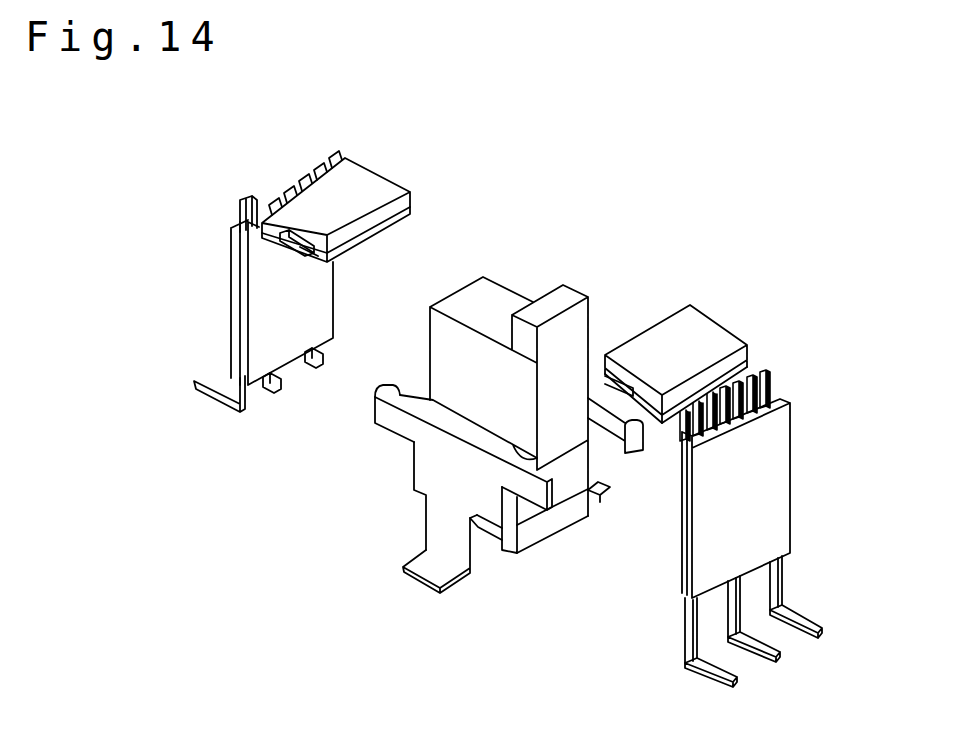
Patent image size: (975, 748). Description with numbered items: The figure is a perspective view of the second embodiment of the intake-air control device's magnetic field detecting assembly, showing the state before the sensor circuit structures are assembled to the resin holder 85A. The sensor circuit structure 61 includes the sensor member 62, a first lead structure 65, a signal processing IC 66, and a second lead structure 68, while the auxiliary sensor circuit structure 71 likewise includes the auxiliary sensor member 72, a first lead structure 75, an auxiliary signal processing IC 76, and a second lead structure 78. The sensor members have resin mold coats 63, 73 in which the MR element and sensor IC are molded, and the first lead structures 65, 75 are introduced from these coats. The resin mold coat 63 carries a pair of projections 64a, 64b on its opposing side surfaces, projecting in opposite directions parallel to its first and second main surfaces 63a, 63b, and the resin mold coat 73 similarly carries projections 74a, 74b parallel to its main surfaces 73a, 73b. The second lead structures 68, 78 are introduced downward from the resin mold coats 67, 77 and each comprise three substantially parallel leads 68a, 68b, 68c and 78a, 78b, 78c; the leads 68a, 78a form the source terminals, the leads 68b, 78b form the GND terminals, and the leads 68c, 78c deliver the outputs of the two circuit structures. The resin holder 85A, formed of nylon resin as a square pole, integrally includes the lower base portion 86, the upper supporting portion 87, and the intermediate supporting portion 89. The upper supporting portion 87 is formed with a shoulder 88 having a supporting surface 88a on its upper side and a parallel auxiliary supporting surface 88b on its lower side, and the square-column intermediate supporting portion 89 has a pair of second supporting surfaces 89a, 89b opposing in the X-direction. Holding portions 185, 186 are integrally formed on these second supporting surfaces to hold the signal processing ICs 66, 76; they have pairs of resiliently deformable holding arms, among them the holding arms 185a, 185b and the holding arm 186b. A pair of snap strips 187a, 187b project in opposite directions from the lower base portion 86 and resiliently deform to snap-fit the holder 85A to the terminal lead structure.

The sensor circuit structure 61 is at (797, 467).
The sensor member 62 is at (707, 337).
The resin mold coat 63 is at (678, 343).
The first main surface 63a is at (638, 408).
The second main surface 63b is at (717, 327).
The projection 64a is at (735, 335).
The projection 64b is at (623, 377).
The first lead structure 65 is at (753, 360).
The signal processing IC 66 is at (757, 522).
The resin mold coat 67 is at (773, 537).
The second lead structure 68 is at (812, 620).
The lead 68a is at (788, 608).
The lead 68b is at (780, 647).
The lead 68c is at (713, 677).
The auxiliary sensor circuit structure 71 is at (220, 225).
The auxiliary sensor member 72 is at (287, 172).
The resin mold coat 73 is at (348, 192).
The first main surface 73a is at (310, 260).
The second main surface 73b is at (338, 187).
The projection 74a is at (390, 187).
The projection 74b is at (297, 243).
The first lead structure 75 is at (313, 160).
The auxiliary signal processing IC 76 is at (267, 330).
The resin mold coat 77 is at (267, 308).
The second lead structure 78 is at (195, 383).
The lead 78a is at (310, 360).
The lead 78b is at (273, 388).
The lead 78c is at (220, 405).
The resin holder 85A is at (433, 468).
The lower base portion 86 is at (535, 523).
The upper supporting portion 87 is at (495, 305).
The shoulder 88 is at (543, 298).
The supporting surface 88a is at (555, 297).
The auxiliary supporting surface 88b is at (472, 312).
The intermediate supporting portion 89 is at (453, 333).
The second supporting surface 89a is at (573, 350).
The second supporting surface 89b is at (428, 370).
The holding portion 185 is at (547, 495).
The holding arm 185a is at (615, 432).
The holding arm 185b is at (508, 553).
The holding portion 186 is at (392, 413).
The holding arm 186b is at (373, 410).
The snap strip 187a is at (592, 497).
The snap strip 187b is at (415, 575).